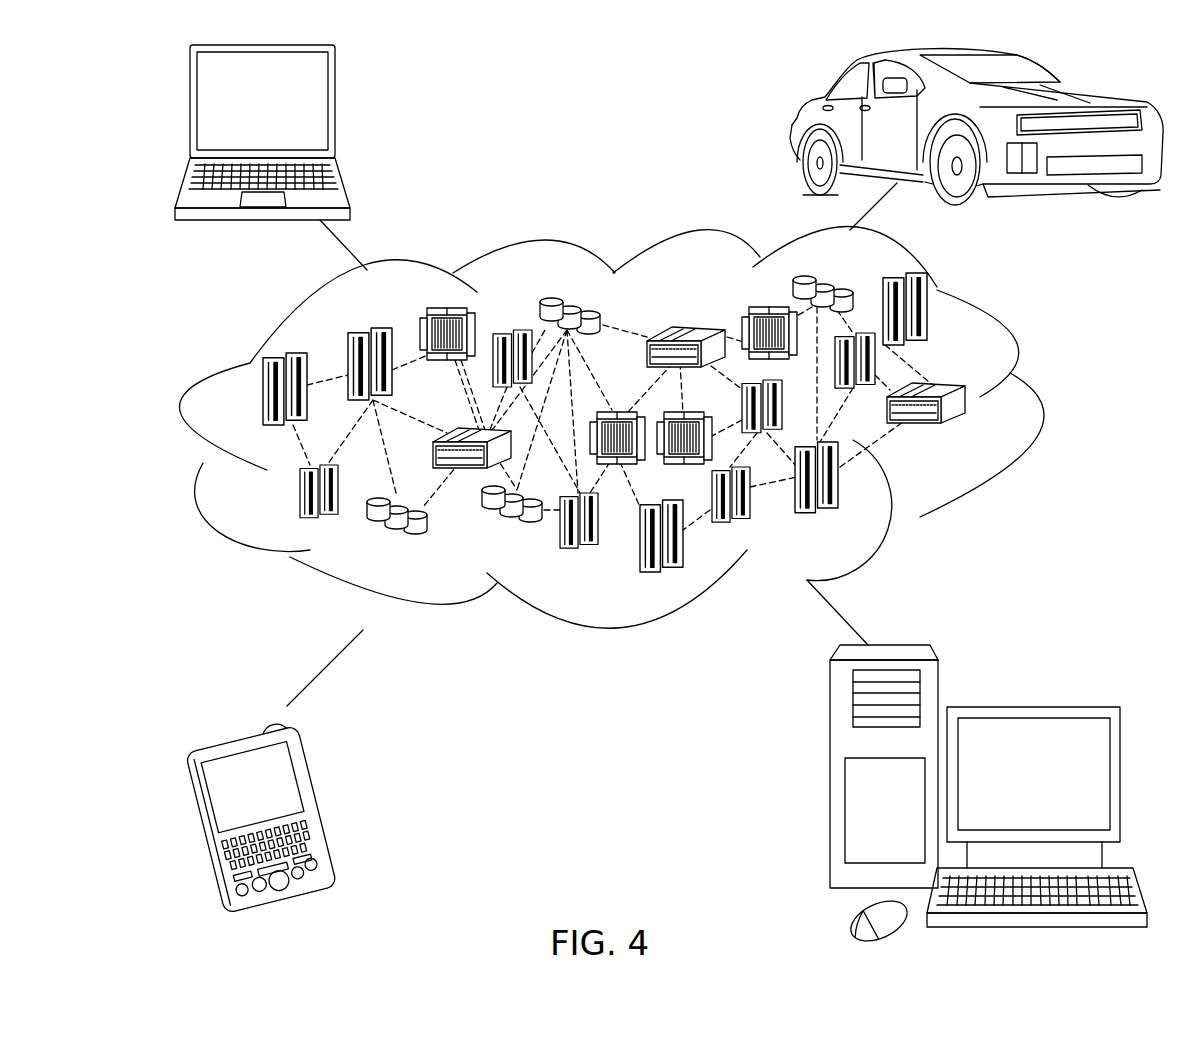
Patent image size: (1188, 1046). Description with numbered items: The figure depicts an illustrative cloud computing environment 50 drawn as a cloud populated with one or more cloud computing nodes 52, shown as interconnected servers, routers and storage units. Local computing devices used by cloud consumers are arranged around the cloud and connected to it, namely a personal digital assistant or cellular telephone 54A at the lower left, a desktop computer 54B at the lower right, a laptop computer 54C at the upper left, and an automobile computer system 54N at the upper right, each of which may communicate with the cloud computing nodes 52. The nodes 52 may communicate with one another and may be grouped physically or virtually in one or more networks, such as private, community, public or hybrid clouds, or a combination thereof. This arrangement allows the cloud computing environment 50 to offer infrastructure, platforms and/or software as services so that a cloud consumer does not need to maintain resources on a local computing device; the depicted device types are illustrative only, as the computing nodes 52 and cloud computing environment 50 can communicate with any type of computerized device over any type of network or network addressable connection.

The cloud computing environment 50 is at (1032, 402).
The cloud computing nodes 52 is at (976, 433).
The personal digital assistant or cellular telephone 54A is at (323, 803).
The desktop computer 54B is at (1033, 707).
The laptop computer 54C is at (335, 110).
The automobile computer system 54N is at (800, 128).